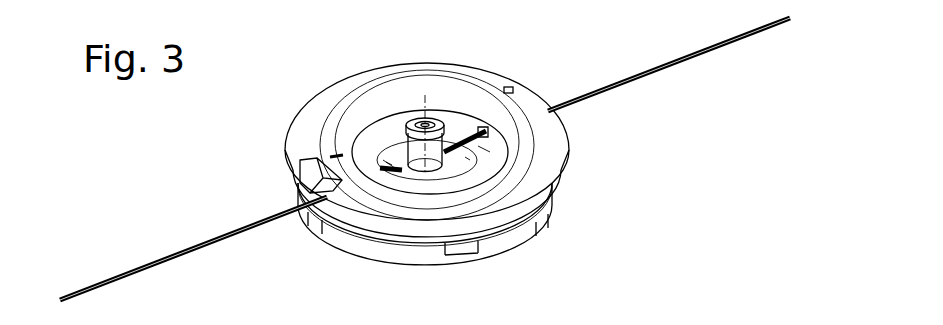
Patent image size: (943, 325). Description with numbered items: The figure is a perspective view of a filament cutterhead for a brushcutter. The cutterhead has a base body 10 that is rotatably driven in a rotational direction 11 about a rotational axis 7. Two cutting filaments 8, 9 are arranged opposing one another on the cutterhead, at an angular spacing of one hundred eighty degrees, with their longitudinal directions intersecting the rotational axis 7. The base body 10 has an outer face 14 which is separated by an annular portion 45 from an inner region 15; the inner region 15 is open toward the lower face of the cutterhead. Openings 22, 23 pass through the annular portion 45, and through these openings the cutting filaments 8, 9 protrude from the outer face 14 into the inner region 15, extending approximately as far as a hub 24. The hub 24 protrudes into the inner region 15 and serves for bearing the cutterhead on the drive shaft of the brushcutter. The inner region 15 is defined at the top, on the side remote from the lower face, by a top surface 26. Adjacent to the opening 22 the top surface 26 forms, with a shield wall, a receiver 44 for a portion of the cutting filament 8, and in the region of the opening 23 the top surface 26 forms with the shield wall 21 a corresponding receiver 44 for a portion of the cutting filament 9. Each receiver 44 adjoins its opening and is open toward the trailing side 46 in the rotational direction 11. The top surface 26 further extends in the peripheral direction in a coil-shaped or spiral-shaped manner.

The rotational axis 7 is at (423, 102).
The cutting filament 8 is at (168, 256).
The cutting filament 9 is at (630, 83).
The base body 10 is at (285, 153).
The rotational direction 11 is at (427, 285).
The outer face 14 is at (532, 220).
The inner region 15 is at (450, 90).
The shield wall 21 is at (463, 130).
The opening 22 is at (323, 208).
The opening 23 is at (478, 128).
The hub 24 is at (433, 155).
The top surface 26 is at (387, 137).
The receiver 44 is at (385, 163).
The annular portion 45 is at (523, 175).
The trailing side 46 is at (387, 161).